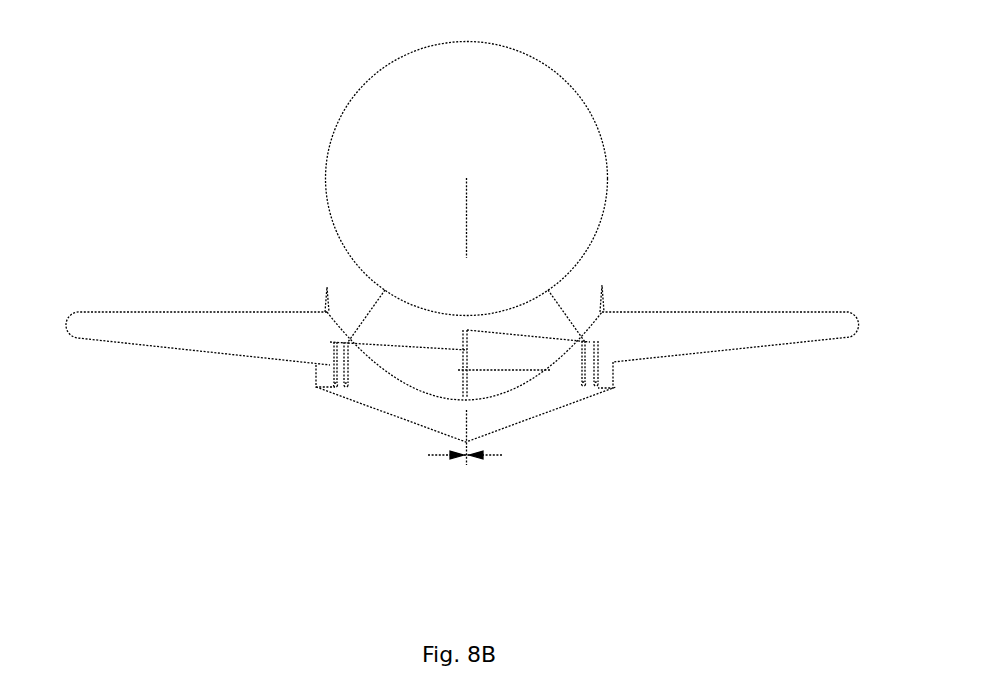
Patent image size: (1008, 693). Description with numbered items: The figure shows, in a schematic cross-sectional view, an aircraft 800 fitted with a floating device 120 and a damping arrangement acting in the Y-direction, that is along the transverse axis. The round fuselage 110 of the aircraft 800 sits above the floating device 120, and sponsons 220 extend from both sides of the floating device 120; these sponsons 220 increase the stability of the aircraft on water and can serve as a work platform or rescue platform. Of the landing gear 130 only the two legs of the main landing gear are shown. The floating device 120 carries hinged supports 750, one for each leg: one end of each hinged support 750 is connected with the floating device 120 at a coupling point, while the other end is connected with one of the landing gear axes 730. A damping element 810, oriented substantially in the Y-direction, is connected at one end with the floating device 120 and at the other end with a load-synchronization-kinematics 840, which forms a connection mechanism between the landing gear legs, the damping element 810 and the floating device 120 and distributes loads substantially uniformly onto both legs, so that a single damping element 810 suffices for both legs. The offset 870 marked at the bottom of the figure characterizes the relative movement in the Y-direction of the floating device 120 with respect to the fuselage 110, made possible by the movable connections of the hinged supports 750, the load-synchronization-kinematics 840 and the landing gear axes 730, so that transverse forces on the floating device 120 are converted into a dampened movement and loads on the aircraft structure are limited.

The aircraft 800 is at (155, 108).
The fuselage 110 is at (595, 235).
The sponsons 220 is at (122, 313).
The landing gear 130 is at (367, 303).
The floating device 120 is at (284, 425).
The landing gear axes 730 is at (602, 343).
The hinged supports 750 is at (333, 366).
The load-synchronization-kinematics 840 is at (465, 343).
The damping element 810 is at (517, 373).
The offset 870 is at (468, 457).